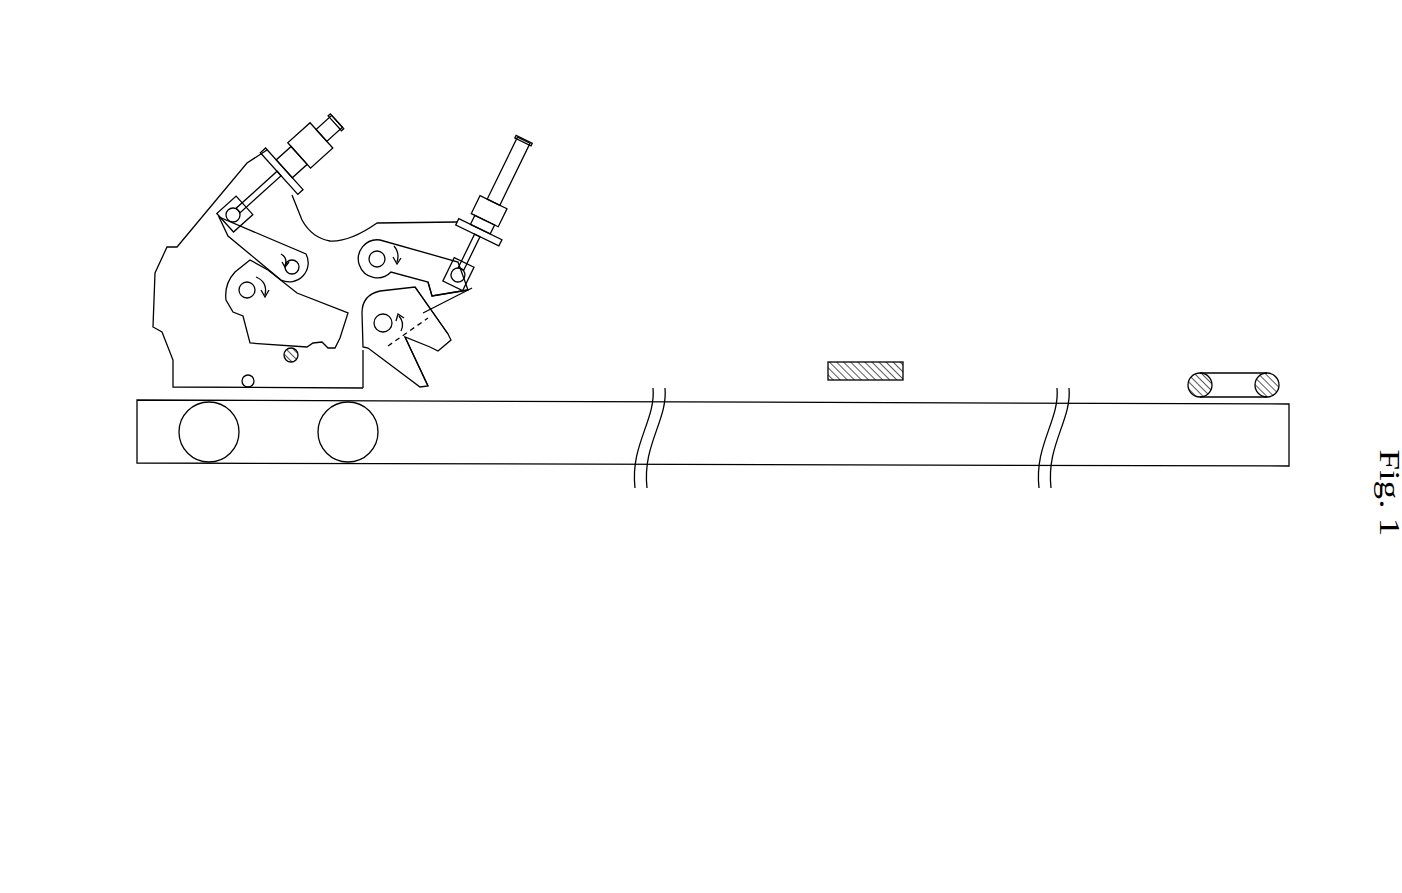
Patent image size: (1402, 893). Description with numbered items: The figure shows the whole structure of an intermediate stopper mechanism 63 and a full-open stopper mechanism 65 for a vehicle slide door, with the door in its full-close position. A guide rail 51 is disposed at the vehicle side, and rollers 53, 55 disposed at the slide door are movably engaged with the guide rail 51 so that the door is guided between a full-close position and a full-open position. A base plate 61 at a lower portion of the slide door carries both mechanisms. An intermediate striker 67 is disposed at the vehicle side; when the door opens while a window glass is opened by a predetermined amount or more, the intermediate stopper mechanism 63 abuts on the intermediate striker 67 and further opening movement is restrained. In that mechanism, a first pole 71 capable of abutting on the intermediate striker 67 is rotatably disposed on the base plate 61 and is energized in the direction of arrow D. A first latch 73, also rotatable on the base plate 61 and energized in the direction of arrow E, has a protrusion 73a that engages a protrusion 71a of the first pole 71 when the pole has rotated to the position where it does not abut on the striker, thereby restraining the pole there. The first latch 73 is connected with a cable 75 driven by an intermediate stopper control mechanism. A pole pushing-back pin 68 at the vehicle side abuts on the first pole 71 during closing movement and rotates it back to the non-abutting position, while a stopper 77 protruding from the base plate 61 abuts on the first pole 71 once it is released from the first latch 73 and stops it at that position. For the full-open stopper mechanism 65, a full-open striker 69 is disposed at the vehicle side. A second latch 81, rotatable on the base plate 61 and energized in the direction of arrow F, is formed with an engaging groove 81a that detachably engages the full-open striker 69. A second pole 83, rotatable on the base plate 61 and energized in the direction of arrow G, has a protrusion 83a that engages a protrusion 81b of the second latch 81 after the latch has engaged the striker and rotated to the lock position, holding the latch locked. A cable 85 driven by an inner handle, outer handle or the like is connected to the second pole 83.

The guide rail 51 is at (1118, 402).
The roller 53 is at (193, 446).
The roller 55 is at (338, 455).
The base plate 61 is at (410, 233).
The intermediate stopper mechanism 63 is at (228, 168).
The full-open stopper mechanism 65 is at (492, 277).
The intermediate striker 67 is at (872, 362).
The pole pushing-back pin 68 is at (292, 363).
The full-open striker 69 is at (1203, 372).
The first pole 71 is at (237, 315).
The protrusion 71a is at (250, 262).
The first latch 73 is at (249, 164).
The protrusion 73a is at (265, 181).
The cable 75 is at (327, 137).
The stopper 77 is at (249, 388).
The second latch 81 is at (450, 336).
The engaging groove 81a is at (425, 350).
The protrusion 81b is at (425, 311).
The second pole 83 is at (423, 263).
The protrusion 83a is at (443, 289).
The cable 85 is at (509, 174).